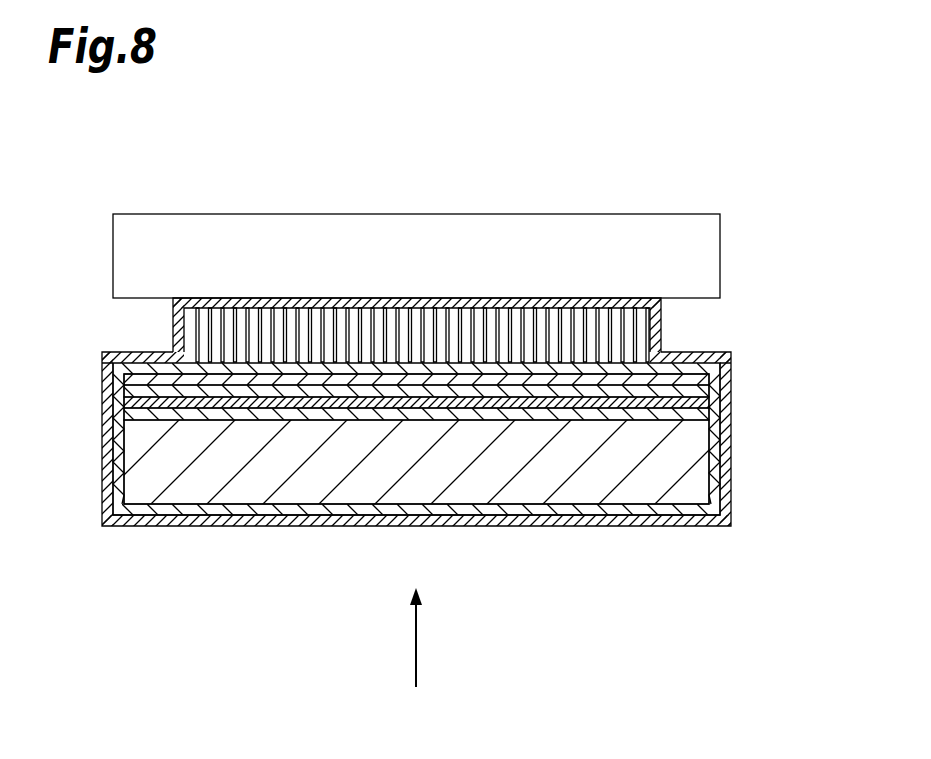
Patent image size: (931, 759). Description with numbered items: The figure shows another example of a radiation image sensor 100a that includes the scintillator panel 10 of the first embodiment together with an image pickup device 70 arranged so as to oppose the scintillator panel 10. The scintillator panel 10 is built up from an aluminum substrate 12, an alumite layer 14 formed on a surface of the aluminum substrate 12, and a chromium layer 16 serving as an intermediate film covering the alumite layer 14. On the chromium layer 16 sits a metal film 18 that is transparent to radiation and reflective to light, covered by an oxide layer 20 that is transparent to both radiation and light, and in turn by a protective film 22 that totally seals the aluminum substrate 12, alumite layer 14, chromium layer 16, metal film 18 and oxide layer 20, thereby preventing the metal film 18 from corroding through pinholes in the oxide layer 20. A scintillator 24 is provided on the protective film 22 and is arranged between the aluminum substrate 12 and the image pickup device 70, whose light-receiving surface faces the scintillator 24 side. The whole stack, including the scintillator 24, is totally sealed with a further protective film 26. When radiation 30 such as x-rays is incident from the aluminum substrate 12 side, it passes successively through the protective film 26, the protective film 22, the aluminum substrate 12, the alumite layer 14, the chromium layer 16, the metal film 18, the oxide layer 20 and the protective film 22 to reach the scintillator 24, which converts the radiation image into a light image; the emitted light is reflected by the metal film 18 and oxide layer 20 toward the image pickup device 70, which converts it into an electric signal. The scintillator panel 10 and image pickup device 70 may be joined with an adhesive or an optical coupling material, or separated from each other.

The radiation image sensor 100a is at (745, 103).
The scintillator panel 10 is at (796, 300).
The aluminum substrate 12 is at (698, 462).
The alumite layer 14 is at (700, 415).
The chromium layer 16 is at (700, 403).
The metal film 18 is at (700, 392).
The oxide layer 20 is at (705, 380).
The protective film 22 is at (712, 367).
The scintillator 24 is at (633, 335).
The protective film 26 is at (652, 311).
The radiation 30 is at (417, 640).
The image pickup device 70 is at (709, 258).